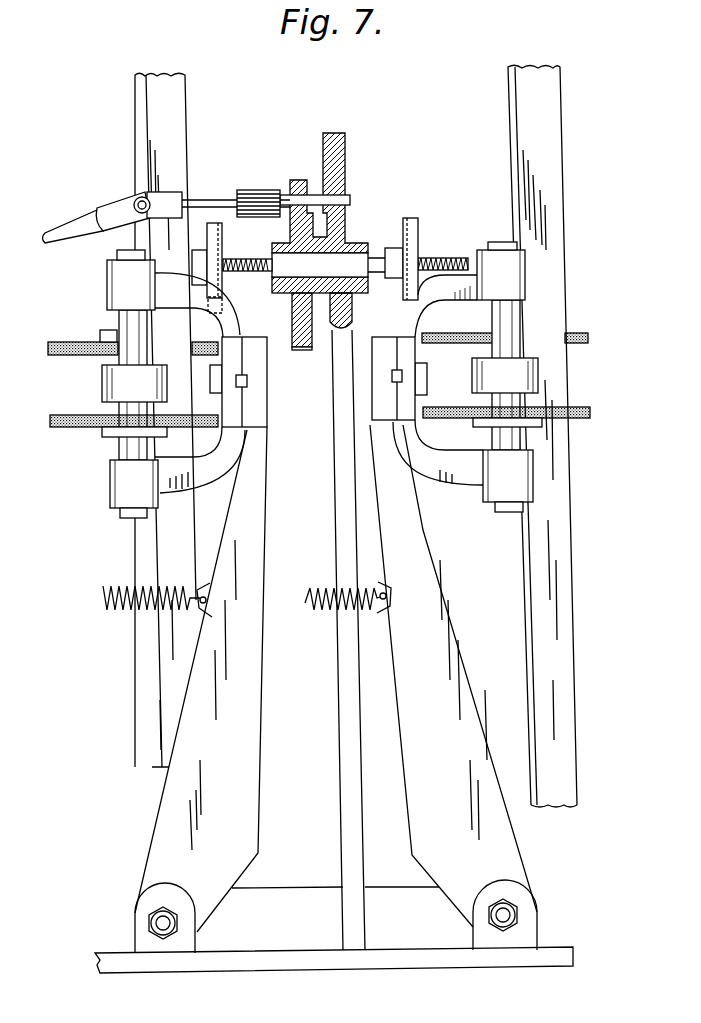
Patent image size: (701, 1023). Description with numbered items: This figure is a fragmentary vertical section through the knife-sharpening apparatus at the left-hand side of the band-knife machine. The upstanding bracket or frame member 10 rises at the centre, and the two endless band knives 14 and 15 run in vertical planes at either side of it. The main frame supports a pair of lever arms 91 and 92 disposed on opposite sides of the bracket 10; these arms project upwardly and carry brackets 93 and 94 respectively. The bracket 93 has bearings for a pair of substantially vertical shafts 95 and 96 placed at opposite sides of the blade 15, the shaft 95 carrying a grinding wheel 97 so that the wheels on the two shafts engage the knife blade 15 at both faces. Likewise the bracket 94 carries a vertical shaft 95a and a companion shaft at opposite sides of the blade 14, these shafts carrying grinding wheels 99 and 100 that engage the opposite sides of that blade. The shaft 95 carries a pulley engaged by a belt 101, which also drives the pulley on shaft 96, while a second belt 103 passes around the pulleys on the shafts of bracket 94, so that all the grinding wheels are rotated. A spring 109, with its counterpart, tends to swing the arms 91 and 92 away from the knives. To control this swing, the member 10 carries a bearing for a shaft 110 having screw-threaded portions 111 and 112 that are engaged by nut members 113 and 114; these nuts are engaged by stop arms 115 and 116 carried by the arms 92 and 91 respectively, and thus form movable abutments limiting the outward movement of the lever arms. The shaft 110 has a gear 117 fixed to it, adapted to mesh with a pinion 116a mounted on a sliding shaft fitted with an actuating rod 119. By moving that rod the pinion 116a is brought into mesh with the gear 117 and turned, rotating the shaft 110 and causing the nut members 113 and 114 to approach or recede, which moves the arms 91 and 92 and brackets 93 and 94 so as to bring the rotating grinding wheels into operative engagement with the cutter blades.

The bracket 10 is at (347, 665).
The endless band knife 14 is at (178, 132).
The endless band knife 15 is at (555, 242).
The lever arm 91 is at (498, 865).
The lever arm 92 is at (165, 833).
The bracket 93 is at (403, 413).
The bracket 94 is at (235, 412).
The vertical shaft 95 is at (518, 434).
The vertical shaft 95a is at (128, 447).
The vertical shaft 96 is at (590, 338).
The grinding wheel 97 is at (592, 412).
The grinding wheel 99 is at (53, 428).
The grinding wheel 100 is at (72, 340).
The belt 101 is at (537, 377).
The belt 103 is at (113, 387).
The spring 109 is at (132, 640).
The shaft 110 is at (337, 263).
The screw threaded portion 111 is at (238, 267).
The screw threaded portion 112 is at (437, 257).
The nut member 113 is at (210, 228).
The nut member 114 is at (408, 233).
The stop arm 115 is at (238, 295).
The stop arm 116 is at (432, 303).
The gear 116a is at (191, 202).
The gear 117 is at (296, 180).
The actuating rod 119 is at (80, 222).